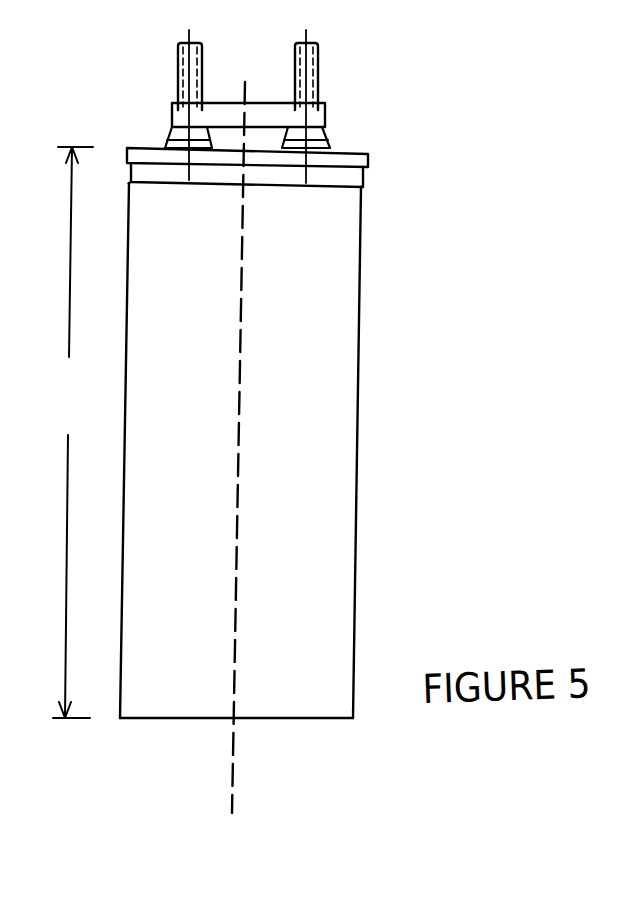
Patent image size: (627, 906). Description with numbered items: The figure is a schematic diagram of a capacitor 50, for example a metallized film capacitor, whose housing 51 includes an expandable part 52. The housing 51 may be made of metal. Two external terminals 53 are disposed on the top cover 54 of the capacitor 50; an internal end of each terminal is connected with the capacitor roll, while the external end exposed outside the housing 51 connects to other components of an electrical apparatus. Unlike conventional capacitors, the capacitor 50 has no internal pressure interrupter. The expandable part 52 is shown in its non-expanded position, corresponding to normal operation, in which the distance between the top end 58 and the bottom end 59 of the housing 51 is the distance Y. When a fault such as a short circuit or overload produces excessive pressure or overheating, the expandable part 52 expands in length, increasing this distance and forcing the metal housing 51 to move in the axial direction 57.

The capacitor 50 is at (512, 178).
The housing 51 is at (358, 421).
The expandable part 52 is at (363, 187).
The external terminals 53 is at (307, 69).
The top cover 54 is at (347, 163).
The axial direction 57 is at (237, 781).
The top end 58 is at (143, 148).
The bottom end 59 is at (158, 719).